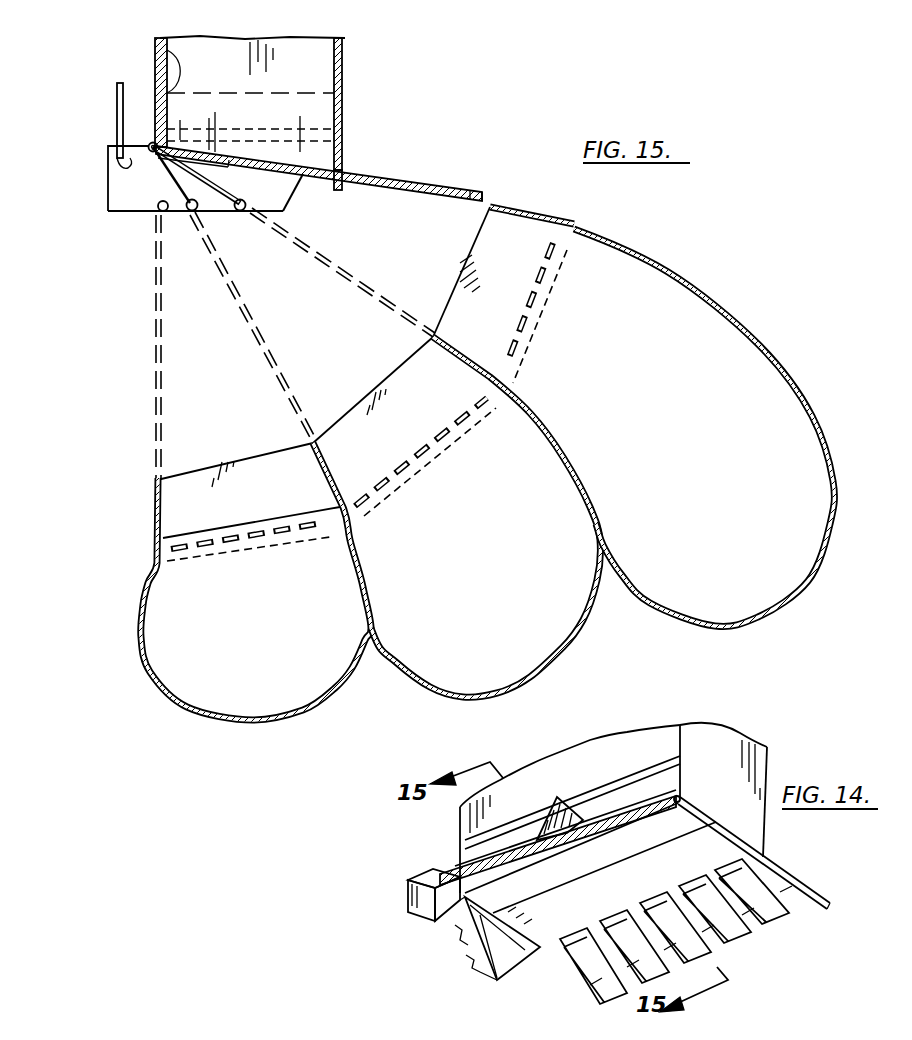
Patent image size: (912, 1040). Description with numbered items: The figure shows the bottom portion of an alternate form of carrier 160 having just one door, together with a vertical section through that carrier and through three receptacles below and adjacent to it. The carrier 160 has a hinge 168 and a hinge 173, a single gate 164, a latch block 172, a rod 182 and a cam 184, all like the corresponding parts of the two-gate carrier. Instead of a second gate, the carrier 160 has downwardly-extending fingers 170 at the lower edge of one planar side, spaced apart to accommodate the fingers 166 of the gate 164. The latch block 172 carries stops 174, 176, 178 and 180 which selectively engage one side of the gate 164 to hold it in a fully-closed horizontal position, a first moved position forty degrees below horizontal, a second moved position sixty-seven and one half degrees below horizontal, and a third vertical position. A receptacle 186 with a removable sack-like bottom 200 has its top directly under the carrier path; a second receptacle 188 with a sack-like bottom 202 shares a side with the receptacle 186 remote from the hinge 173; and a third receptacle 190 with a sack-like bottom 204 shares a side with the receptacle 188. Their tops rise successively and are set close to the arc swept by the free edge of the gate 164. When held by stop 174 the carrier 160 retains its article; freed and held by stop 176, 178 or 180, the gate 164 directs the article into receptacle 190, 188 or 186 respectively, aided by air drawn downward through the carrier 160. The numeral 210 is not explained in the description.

In FIG. 15, the carrier 160 is at (345, 95).
In FIG. 14, the carrier 160 is at (727, 740).
In FIG. 15, the gate 164 is at (420, 184).
In FIG. 14, the gate 164 is at (545, 942).
In FIG. 15, the fingers 166 is at (483, 193).
In FIG. 14, the fingers 166 is at (813, 908).
In FIG. 15, the hinge 168 is at (148, 146).
In FIG. 14, the hinge 168 is at (677, 799).
In FIG. 15, the downwardly-extending fingers 170 is at (339, 190).
In FIG. 14, the downwardly-extending fingers 170 is at (637, 876).
In FIG. 15, the latch block 172 is at (117, 213).
In FIG. 14, the latch block 172 is at (408, 905).
In FIG. 15, the hinge 173 is at (167, 58).
In FIG. 14, the hinge 173 is at (610, 820).
In FIG. 15, the stop 174 is at (290, 180).
In FIG. 14, the stop 174 is at (512, 935).
In FIG. 15, the stop 176 is at (238, 211).
In FIG. 14, the stop 176 is at (487, 972).
In FIG. 15, the stop 178 is at (190, 212).
In FIG. 14, the stop 178 is at (468, 955).
In FIG. 15, the stop 180 is at (158, 216).
In FIG. 14, the stop 180 is at (455, 930).
In FIG. 15, the rod 182 is at (122, 172).
In FIG. 14, the rod 182 is at (466, 860).
In FIG. 15, the cam 184 is at (117, 97).
In FIG. 14, the cam 184 is at (557, 797).
In FIG. 15, the receptacle 186 is at (155, 503).
In FIG. 15, the second receptacle 188 is at (392, 380).
In FIG. 15, the third receptacle 190 is at (480, 237).
In FIG. 15, the sack-like bottom 200 is at (226, 706).
In FIG. 15, the sack-like bottom 202 is at (521, 657).
In FIG. 15, the sack-like bottom 204 is at (730, 592).
In FIG. 14, the element 210 is at (184, 1035).